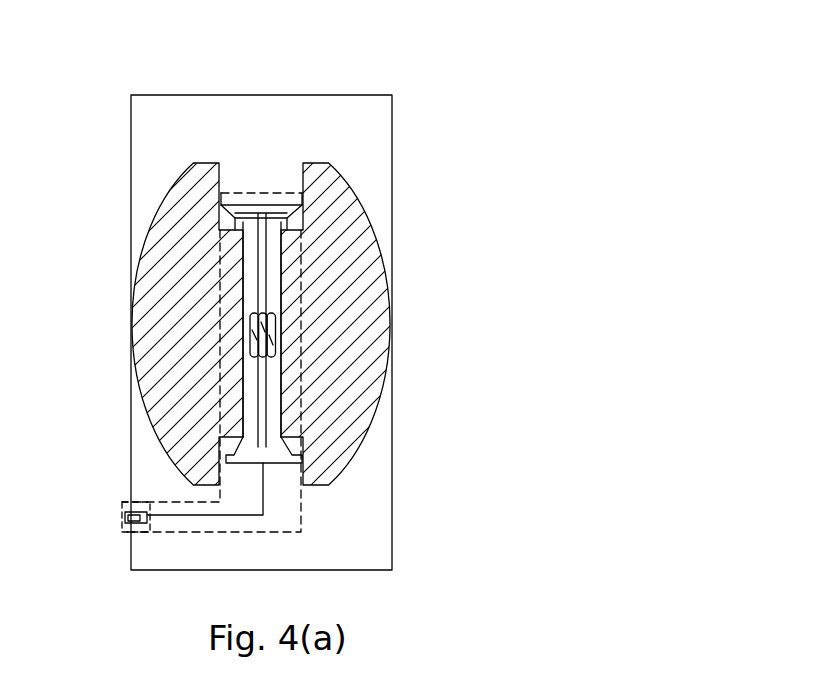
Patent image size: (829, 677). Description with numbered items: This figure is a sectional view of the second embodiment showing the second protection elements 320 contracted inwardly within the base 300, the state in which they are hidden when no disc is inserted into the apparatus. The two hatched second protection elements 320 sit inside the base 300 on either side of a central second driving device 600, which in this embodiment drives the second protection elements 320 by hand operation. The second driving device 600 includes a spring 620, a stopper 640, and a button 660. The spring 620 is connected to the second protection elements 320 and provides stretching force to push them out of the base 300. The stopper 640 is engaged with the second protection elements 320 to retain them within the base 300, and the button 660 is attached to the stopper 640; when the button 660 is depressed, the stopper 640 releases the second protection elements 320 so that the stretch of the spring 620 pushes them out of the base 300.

The base 300 is at (379, 178).
The second protection elements 320 is at (337, 410).
The second driving device 600 is at (249, 193).
The spring 620 is at (277, 339).
The stopper 640 is at (282, 205).
The button 660 is at (125, 513).